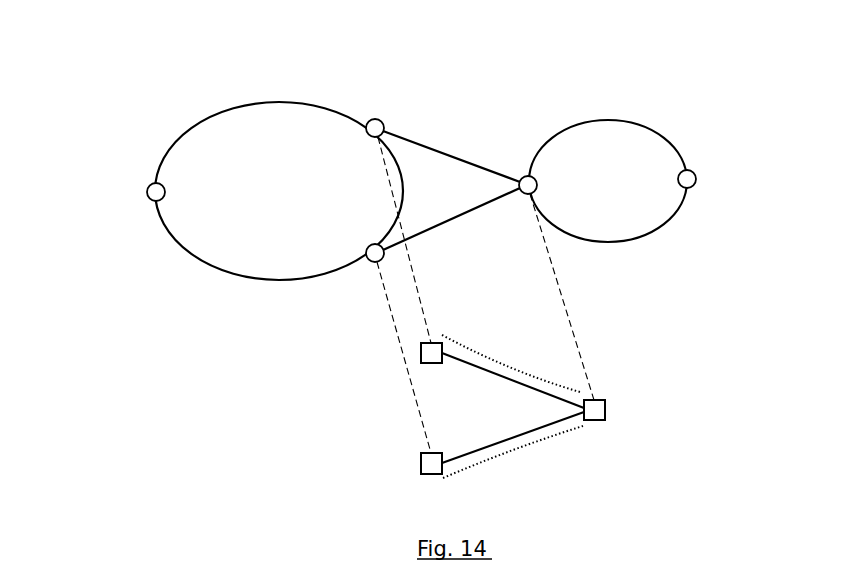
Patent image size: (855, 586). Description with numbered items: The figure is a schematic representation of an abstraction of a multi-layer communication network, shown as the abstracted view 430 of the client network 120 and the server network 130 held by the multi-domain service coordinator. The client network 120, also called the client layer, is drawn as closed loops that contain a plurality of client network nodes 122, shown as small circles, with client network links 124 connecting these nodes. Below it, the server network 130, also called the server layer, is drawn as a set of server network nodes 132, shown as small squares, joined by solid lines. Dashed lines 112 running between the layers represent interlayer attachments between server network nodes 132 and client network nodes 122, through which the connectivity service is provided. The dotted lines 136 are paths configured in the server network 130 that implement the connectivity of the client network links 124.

The first loop 430 is at (148, 84).
The client network 120 is at (706, 122).
The client network nodes 122 is at (381, 124).
The client network links 124 is at (462, 153).
The interlayer attachments 112 is at (570, 323).
The server network 130 is at (380, 422).
The server network nodes 132 is at (590, 413).
The paths 136 is at (507, 447).